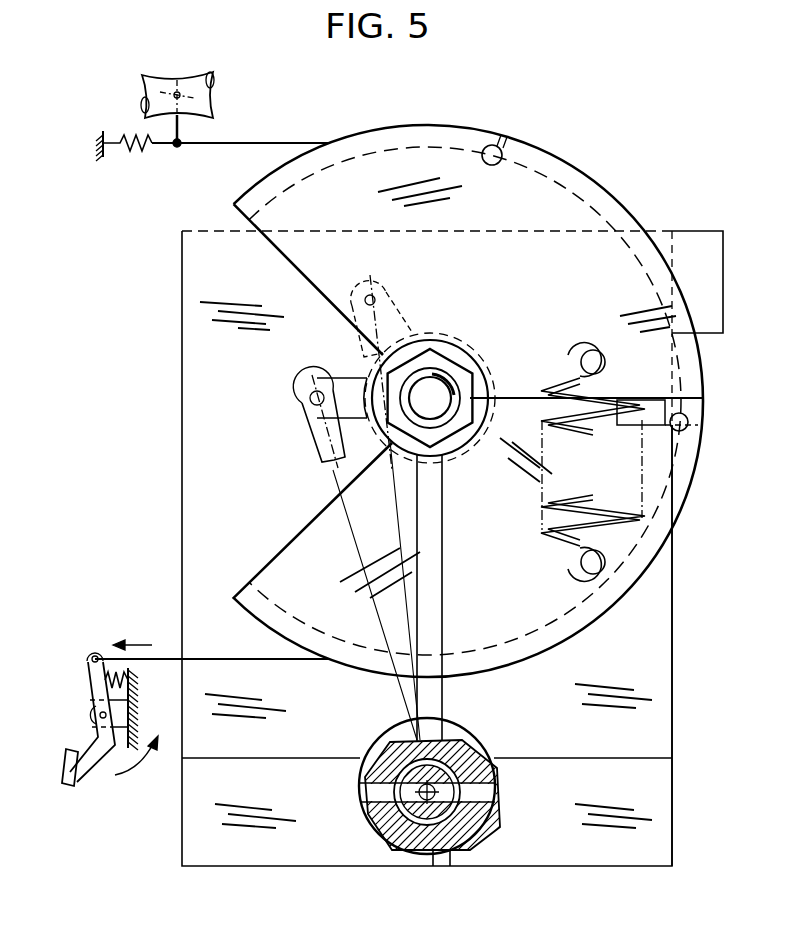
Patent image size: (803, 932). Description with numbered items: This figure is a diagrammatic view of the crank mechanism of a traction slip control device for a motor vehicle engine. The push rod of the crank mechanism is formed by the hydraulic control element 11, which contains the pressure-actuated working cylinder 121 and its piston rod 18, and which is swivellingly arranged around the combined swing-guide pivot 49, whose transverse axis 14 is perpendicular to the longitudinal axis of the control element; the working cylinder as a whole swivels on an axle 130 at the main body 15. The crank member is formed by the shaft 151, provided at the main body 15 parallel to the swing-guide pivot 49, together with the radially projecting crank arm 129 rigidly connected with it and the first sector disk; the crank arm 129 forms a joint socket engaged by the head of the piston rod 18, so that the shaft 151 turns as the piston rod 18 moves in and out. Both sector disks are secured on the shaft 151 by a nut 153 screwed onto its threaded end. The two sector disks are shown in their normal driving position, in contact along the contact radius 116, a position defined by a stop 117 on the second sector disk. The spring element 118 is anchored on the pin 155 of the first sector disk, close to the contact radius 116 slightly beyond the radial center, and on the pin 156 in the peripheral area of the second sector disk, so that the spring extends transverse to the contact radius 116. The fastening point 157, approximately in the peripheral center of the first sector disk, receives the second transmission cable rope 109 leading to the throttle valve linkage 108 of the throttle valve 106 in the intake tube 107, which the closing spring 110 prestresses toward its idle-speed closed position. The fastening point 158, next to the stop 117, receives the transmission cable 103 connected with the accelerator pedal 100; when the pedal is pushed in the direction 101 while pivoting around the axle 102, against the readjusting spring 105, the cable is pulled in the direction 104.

The main body 15 is at (660, 694).
The fastening point 157 is at (498, 152).
The fastening point 158 is at (690, 430).
The shaft 151 is at (436, 393).
The nut 153 is at (429, 358).
The transverse axis 14 is at (408, 680).
The axle 130 is at (436, 860).
The swing-guide pivot 49 is at (452, 835).
The hydraulic control element 11 is at (358, 590).
The working cylinder 121 is at (375, 640).
The crank arm 129 is at (345, 376).
The piston rod 18 is at (318, 449).
The second transmission cable rope 109 is at (257, 141).
The closing spring 110 is at (133, 156).
The throttle valve linkage 108 is at (182, 130).
The intake tube 107 is at (157, 80).
The throttle valve 106 is at (179, 90).
The contact radius 116 is at (511, 396).
The stop 117 is at (648, 406).
The spring element 118 is at (675, 532).
The pin 155 is at (593, 352).
The pin 156 is at (603, 595).
The transmission cable 103 is at (207, 658).
The direction 104 is at (135, 643).
The direction 101 is at (115, 775).
The accelerator pedal 100 is at (67, 767).
The readjusting spring 105 is at (100, 682).
The axle 102 is at (98, 714).